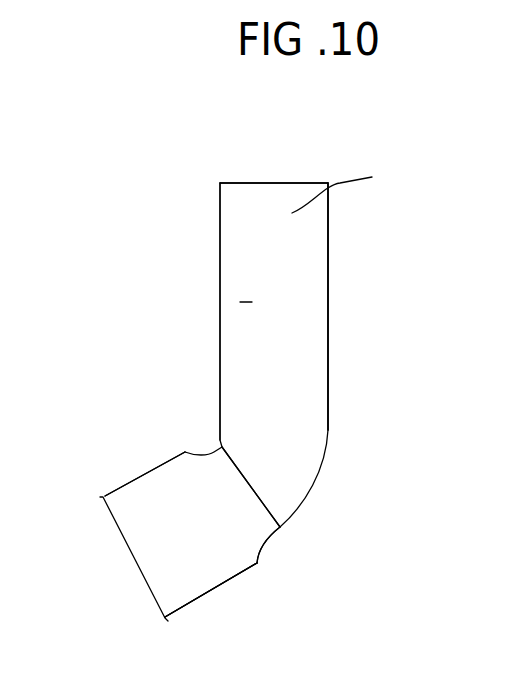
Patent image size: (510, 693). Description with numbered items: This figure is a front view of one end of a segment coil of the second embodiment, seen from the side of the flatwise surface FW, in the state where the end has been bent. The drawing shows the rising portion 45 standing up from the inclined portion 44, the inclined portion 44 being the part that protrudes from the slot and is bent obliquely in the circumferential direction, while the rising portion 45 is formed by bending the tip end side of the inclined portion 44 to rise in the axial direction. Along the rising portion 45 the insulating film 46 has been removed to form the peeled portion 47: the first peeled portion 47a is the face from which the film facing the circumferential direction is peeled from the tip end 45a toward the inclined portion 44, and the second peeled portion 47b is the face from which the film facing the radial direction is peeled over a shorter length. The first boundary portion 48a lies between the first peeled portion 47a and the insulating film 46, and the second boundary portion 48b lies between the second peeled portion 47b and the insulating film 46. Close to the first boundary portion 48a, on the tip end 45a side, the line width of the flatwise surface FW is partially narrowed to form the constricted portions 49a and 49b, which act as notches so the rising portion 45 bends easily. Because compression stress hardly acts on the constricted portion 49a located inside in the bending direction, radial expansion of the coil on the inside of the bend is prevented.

The inclined portion 44 is at (125, 485).
The rising portion 45 is at (345, 247).
The tip end 45a is at (265, 183).
The insulating film 46 is at (190, 587).
The peeled portion 47 is at (302, 360).
The first peeled portion 47a is at (219, 257).
The second peeled portion 47b is at (252, 302).
The first boundary portion 48a is at (185, 450).
The second boundary portion 48b is at (253, 490).
The constricted portion 49a is at (208, 452).
The constricted portion 49b is at (263, 548).
The flatwise surface FW is at (355, 188).